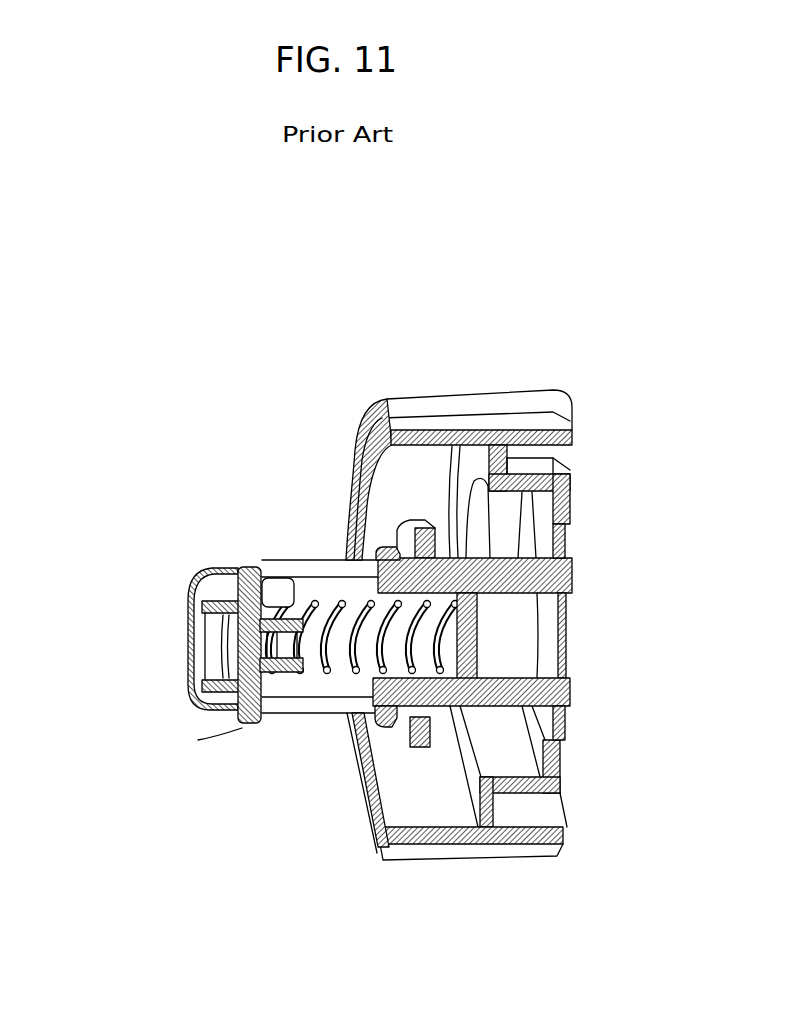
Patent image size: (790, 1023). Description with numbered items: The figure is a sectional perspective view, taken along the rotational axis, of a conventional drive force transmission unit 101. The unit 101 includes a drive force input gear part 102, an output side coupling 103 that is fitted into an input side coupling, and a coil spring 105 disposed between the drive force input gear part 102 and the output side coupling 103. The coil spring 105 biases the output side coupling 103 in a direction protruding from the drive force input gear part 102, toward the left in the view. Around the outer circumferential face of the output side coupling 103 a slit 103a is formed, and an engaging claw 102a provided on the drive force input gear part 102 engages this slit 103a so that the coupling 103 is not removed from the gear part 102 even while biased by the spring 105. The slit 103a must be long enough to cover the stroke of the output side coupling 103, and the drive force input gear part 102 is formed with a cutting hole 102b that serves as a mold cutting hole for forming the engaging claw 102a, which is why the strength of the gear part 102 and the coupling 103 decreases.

The drive force transmission unit 101 is at (175, 457).
The drive force input gear part 102 is at (470, 410).
The engaging claw 102a is at (380, 548).
The cutting hole 102b is at (555, 543).
The output side coupling 103 is at (253, 725).
The slit 103a is at (323, 560).
The coil spring 105 is at (305, 598).